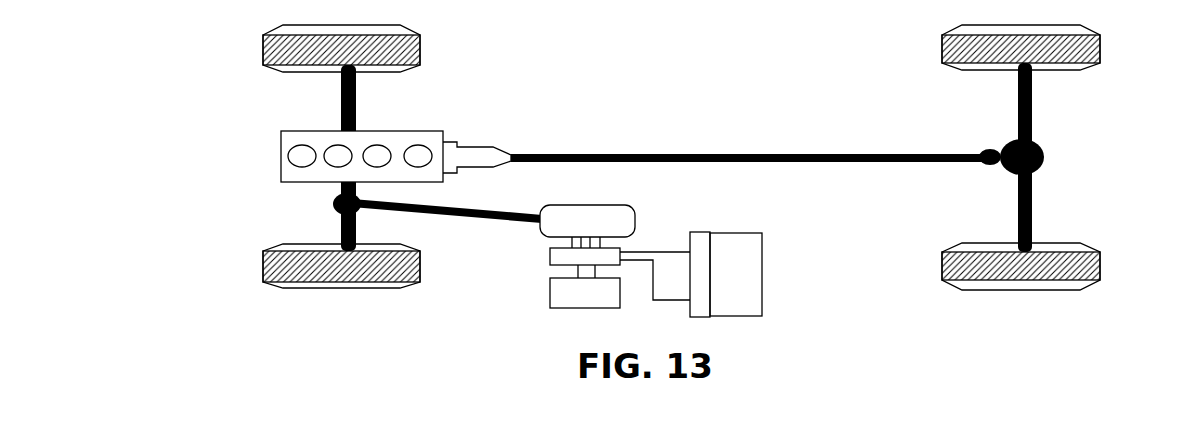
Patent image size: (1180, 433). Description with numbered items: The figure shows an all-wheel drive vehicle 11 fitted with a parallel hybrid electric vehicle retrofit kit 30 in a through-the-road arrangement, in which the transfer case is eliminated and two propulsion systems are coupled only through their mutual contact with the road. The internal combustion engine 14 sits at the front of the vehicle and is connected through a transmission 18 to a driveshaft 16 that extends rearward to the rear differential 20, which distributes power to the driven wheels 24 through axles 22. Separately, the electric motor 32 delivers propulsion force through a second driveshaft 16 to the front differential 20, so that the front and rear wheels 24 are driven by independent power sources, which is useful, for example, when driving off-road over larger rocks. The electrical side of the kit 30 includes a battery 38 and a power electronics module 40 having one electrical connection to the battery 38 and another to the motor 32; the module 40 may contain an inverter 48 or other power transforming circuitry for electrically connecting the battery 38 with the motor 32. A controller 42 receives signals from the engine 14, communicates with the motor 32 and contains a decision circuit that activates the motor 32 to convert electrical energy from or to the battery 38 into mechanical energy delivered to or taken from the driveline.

The vehicle 11 is at (602, 108).
The internal combustion engine 14 is at (398, 132).
The driveshaft 16 is at (546, 153).
The transmission 18 is at (481, 143).
The rear differential 20 is at (333, 202).
The axles 22 is at (341, 112).
The driven wheels 24 is at (271, 64).
The parallel hybrid electric vehicle retrofit kit 30 is at (520, 304).
The electric motor 32 is at (572, 205).
The battery 38 is at (755, 240).
The power electronics module 40 is at (706, 240).
The controller 42 is at (468, 314).
The inverter 48 is at (552, 257).